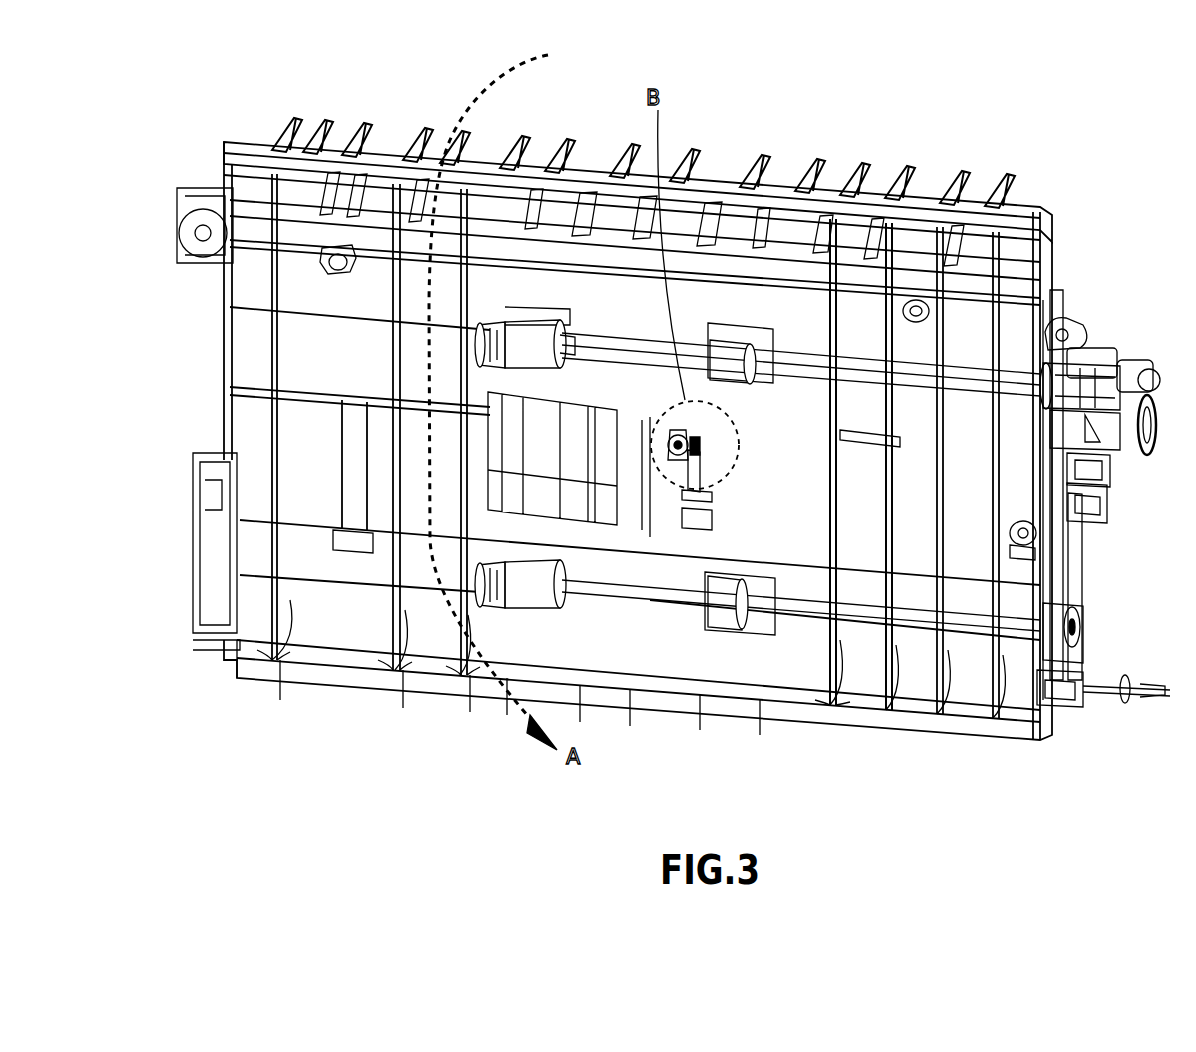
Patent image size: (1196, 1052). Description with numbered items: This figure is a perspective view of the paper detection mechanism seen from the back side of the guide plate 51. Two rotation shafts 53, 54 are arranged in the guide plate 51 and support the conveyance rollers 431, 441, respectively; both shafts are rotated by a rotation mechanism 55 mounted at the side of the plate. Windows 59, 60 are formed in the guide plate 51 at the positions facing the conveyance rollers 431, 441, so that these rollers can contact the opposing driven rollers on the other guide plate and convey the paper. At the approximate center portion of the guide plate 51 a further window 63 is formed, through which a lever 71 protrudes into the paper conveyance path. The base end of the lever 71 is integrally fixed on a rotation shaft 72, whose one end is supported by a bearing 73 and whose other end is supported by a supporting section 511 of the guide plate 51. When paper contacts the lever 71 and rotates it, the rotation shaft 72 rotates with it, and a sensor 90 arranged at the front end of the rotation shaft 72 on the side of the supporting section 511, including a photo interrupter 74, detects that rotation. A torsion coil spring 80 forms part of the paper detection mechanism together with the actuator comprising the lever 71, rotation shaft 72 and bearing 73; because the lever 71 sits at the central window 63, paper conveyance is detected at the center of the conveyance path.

The guide plate 51 is at (258, 425).
The rotation shaft 53 is at (857, 367).
The rotation shaft 54 is at (862, 605).
The rotation mechanism 55 is at (1127, 352).
The window 59 is at (742, 322).
The window 60 is at (760, 605).
The window 63 is at (700, 478).
The lever 71 is at (700, 452).
The rotation shaft 72 is at (912, 465).
The bearing 73 is at (652, 465).
The photo interrupter 74 is at (1113, 467).
The torsion coil spring 80 is at (676, 432).
The sensor 90 is at (1110, 493).
The conveyance roller 431 is at (718, 330).
The conveyance roller 441 is at (727, 607).
The supporting section 511 is at (1065, 510).